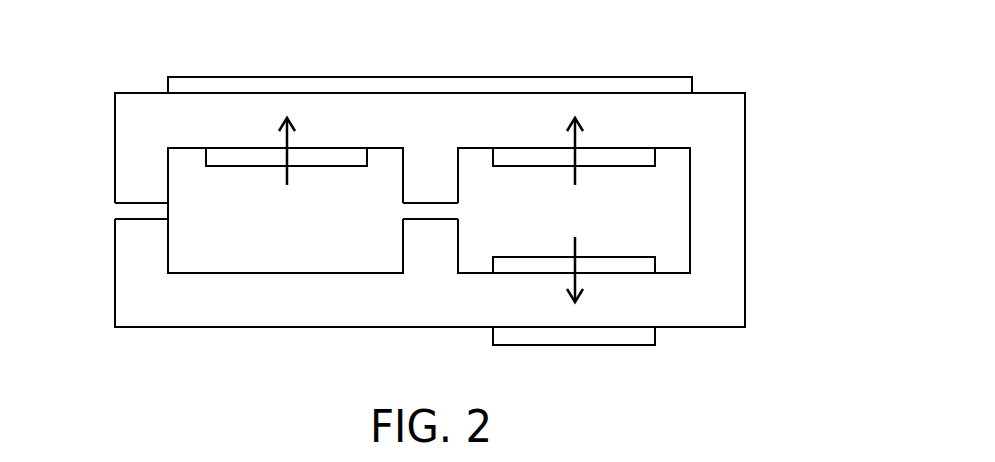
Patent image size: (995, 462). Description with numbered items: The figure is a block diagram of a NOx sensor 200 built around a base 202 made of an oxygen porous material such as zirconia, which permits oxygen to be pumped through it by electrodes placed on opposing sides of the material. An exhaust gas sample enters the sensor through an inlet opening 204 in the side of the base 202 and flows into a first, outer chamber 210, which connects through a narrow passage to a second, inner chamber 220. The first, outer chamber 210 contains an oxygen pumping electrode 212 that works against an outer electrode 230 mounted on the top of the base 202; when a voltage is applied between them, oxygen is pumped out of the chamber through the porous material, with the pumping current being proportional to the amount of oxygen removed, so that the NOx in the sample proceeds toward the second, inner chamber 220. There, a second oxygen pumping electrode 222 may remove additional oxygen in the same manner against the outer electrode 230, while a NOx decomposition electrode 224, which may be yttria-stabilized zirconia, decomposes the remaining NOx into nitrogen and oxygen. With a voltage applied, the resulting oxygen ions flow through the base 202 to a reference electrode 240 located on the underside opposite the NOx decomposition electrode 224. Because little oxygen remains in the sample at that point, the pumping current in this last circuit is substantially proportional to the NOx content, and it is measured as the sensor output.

The NOx sensor 200 is at (772, 72).
The base 202 is at (722, 93).
The inlet opening 204 is at (97, 201).
The first, outer chamber 210 is at (325, 232).
The oxygen pumping electrode 212 is at (232, 167).
The second, inner chamber 220 is at (523, 225).
The oxygen pumping electrode 222 is at (657, 157).
The NOx decomposition electrode 224 is at (657, 258).
The outer electrode 230 is at (247, 77).
The reference electrode 240 is at (600, 345).